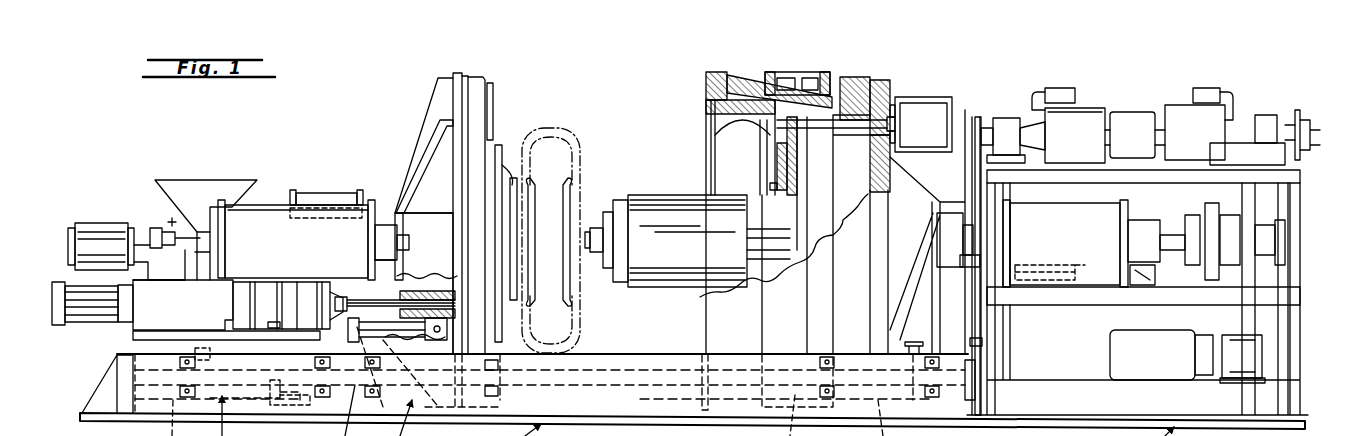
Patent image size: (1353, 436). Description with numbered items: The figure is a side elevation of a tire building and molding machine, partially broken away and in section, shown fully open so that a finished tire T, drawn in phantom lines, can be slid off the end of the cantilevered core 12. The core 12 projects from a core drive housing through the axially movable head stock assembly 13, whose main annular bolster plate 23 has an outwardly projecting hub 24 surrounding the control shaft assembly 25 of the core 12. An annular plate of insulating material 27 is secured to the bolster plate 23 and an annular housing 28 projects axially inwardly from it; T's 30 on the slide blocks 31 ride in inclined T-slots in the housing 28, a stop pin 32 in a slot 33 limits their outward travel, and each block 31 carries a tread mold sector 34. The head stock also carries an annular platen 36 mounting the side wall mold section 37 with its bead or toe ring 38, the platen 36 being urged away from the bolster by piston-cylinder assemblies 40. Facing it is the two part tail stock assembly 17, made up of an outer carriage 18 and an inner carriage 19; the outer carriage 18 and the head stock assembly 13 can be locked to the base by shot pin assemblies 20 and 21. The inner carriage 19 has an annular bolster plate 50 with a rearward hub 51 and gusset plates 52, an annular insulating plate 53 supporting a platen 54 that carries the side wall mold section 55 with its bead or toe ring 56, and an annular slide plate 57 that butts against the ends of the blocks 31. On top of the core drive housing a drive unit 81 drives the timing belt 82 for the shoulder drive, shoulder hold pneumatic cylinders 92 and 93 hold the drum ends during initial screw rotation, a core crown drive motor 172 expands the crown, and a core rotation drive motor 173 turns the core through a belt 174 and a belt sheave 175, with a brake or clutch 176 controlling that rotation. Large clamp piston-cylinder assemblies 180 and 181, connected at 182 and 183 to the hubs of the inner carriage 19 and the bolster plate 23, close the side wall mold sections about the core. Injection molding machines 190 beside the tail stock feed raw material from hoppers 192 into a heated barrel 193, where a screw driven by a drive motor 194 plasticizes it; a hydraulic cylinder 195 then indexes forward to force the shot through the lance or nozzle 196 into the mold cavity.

The core 12 is at (660, 192).
The head stock assembly 13 is at (900, 85).
The tail stock assembly 17 is at (377, 180).
The outer carriage 18 is at (146, 211).
The inner carriage 19 is at (432, 90).
The shot pin assembly 20 is at (207, 352).
The shot pin assembly 21 is at (920, 342).
The main annular bolster plate 23 is at (880, 80).
The hub 24 is at (940, 203).
The control shaft assembly 25 is at (797, 270).
The annular plate of insulating material 27 is at (846, 78).
The annular housing 28 is at (790, 72).
The T 30 is at (732, 78).
The slide block 31 is at (705, 87).
The stop pin 32 is at (782, 80).
The slot 33 is at (805, 80).
The tread mold sector 34 is at (735, 112).
The annular platen 36 is at (810, 152).
The side wall mold section 37 is at (775, 162).
The bead or toe ring 38 is at (768, 185).
The piston-cylinder assembly 40 is at (930, 97).
The annular bolster plate 50 is at (456, 72).
The hub 51 is at (432, 212).
The gusset plate 52 is at (428, 117).
The annular insulating plate 53 is at (470, 75).
The platen 54 is at (486, 79).
The side wall mold section 55 is at (503, 152).
The bead or toe ring 56 is at (529, 178).
The annular slide plate 57 is at (495, 102).
The drive unit 81 is at (1080, 100).
The timing belt 82 is at (982, 117).
The shoulder hold pneumatic cylinder 92 is at (330, 192).
The shoulder hold pneumatic cylinder 93 is at (1140, 283).
The core crown drive motor 172 is at (1252, 105).
The core rotation drive motor 173 is at (1112, 357).
The belt 174 is at (1260, 335).
The belt sheave 175 is at (1238, 193).
The brake or clutch 176 is at (1180, 210).
The clamp piston-cylinder assembly 180 is at (272, 208).
The clamp piston-cylinder assembly 181 is at (1055, 265).
The rod connection 182 is at (396, 220).
The rod connection 183 is at (946, 258).
The injection molding machine 190 is at (113, 333).
The hopper 192 is at (210, 182).
The heated barrel 193 is at (280, 300).
The drive motor 194 is at (104, 222).
The hydraulic cylinder 195 is at (76, 288).
The lance or nozzle 196 is at (368, 295).
The tire T is at (567, 135).